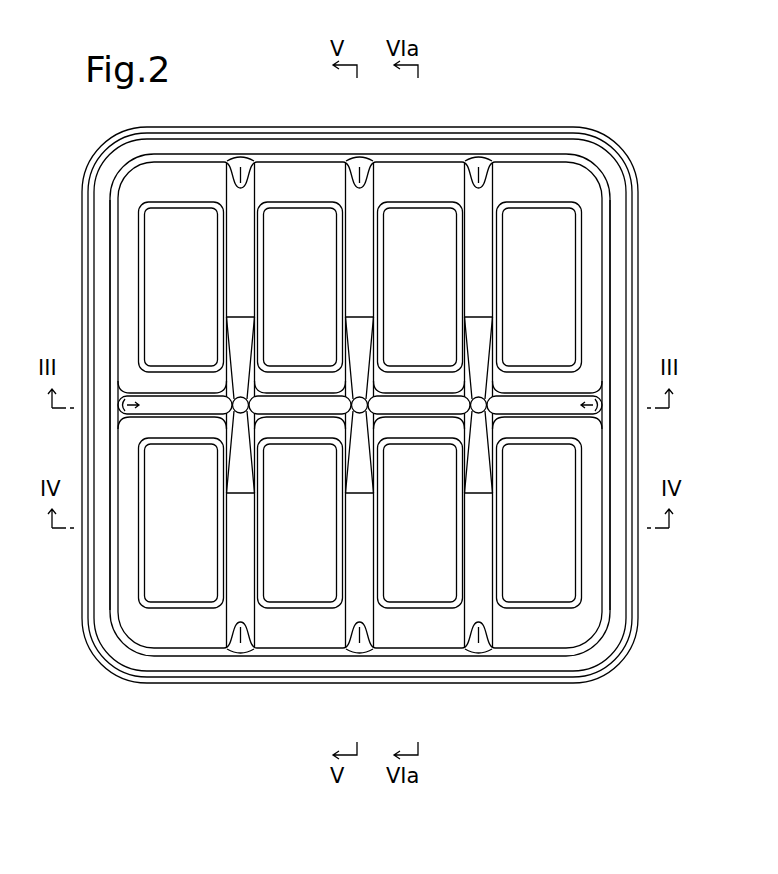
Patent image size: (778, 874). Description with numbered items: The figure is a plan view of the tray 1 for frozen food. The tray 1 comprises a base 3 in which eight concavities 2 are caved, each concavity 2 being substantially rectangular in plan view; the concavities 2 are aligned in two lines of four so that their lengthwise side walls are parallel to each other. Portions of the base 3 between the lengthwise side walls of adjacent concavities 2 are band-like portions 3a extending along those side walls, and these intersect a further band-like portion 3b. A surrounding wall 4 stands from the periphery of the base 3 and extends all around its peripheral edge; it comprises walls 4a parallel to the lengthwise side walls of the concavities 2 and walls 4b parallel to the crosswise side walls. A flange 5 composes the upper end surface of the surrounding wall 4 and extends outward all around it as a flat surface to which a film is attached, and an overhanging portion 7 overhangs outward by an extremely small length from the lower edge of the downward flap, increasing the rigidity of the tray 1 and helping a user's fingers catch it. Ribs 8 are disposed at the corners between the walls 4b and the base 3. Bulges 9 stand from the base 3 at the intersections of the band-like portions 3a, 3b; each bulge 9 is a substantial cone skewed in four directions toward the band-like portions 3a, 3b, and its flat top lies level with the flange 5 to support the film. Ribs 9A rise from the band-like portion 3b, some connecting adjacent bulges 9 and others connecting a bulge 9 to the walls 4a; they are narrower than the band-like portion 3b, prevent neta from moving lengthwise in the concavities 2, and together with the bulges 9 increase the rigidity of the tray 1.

The tray 1 is at (509, 116).
The concavity 2 is at (186, 283).
The base 3 is at (168, 202).
The band-like portion 3a is at (251, 259).
The band-like portion 3b is at (170, 384).
The surrounding wall 4 is at (388, 156).
The wall 4a is at (110, 457).
The wall 4b is at (300, 162).
The flange 5 is at (438, 140).
The overhanging portion 7 is at (256, 133).
The rib 8 is at (252, 173).
The bulge 9 is at (215, 370).
The rib 9A is at (396, 400).